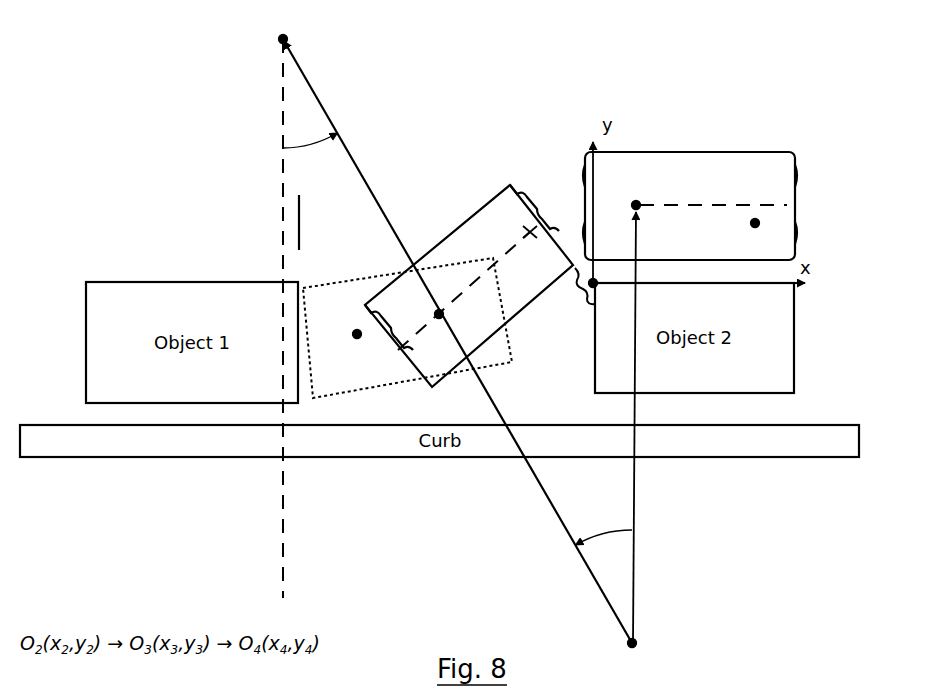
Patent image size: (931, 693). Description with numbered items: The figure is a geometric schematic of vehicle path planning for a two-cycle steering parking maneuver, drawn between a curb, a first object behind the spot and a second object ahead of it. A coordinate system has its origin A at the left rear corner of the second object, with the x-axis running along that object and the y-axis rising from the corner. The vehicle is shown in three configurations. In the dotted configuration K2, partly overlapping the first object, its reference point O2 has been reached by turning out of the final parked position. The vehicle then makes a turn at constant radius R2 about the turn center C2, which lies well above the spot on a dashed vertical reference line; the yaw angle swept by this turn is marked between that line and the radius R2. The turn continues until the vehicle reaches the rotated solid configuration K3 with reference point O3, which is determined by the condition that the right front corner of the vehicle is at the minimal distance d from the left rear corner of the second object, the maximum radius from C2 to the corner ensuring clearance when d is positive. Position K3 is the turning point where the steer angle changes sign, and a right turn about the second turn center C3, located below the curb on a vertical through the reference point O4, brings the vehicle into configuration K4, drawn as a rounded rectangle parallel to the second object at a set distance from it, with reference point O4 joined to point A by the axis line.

The origin of the coordinate system A is at (676, 263).
The turn center C2 is at (334, 31).
The turn center C3 is at (688, 435).
The turn radius R2 is at (430, 383).
The vehicle configuration K2 is at (407, 328).
The vehicle position O2 is at (349, 349).
The vehicle configuration K3 is at (469, 286).
The vehicle position O3 is at (439, 314).
The minimal distance d is at (573, 292).
The vehicle configuration K4 is at (690, 206).
The vehicle position O4 is at (703, 191).